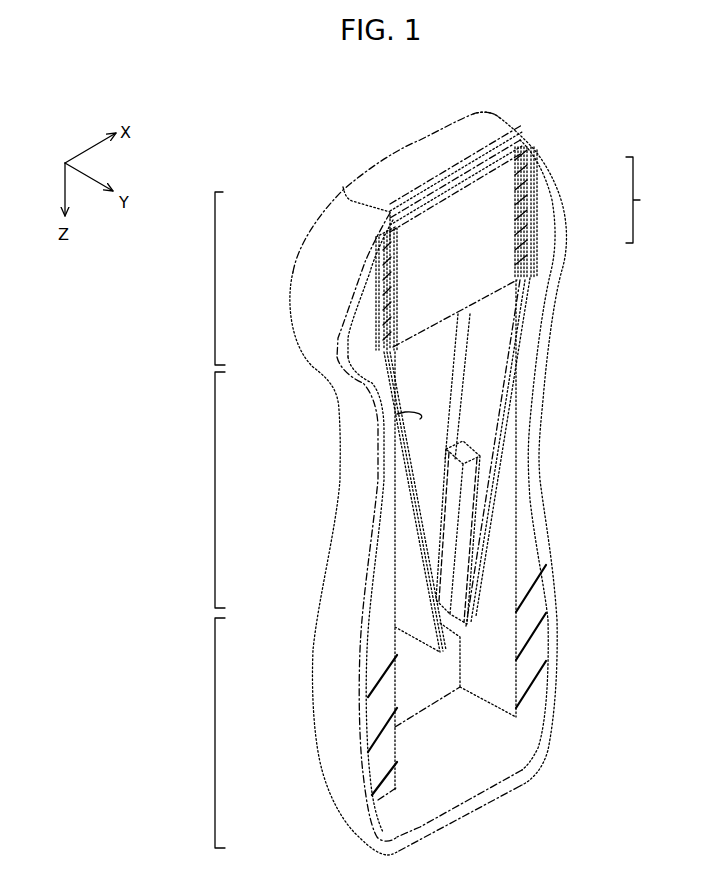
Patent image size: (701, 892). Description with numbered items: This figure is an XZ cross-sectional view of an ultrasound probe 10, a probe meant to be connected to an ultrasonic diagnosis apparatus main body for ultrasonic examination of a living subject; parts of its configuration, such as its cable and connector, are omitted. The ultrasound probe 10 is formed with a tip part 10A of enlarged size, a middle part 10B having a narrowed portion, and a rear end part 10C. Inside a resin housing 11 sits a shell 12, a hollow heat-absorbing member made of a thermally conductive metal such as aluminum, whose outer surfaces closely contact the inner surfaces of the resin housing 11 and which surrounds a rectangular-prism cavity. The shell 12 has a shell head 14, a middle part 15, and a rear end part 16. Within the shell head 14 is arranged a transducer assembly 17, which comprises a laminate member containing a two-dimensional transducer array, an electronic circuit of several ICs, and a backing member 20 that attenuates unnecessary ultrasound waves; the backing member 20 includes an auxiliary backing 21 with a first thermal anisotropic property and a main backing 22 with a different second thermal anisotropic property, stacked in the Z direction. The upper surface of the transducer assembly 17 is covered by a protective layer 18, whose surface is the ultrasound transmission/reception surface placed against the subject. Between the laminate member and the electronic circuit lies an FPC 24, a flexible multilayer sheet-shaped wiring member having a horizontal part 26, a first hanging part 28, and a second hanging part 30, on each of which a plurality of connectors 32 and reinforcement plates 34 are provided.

The ultrasound probe 10 is at (329, 107).
The tip part 10A is at (196, 278).
The middle part 10B is at (196, 490).
The rear end part 10C is at (198, 733).
The resin housing 11 is at (553, 528).
The shell 12 is at (537, 493).
The shell head 14 is at (358, 312).
The middle part 15 is at (387, 525).
The rear end part 16 is at (380, 710).
The transducer assembly 17 is at (485, 310).
The protective layer 18 is at (483, 131).
The backing member 20 is at (649, 200).
The auxiliary backing 21 is at (490, 180).
The main backing 22 is at (494, 232).
The FPC 24 is at (412, 207).
The horizontal part 26 is at (446, 198).
The first hanging part 28 is at (508, 402).
The second hanging part 30 is at (420, 419).
The connectors 32 is at (462, 578).
The reinforcement plates 34 is at (488, 555).